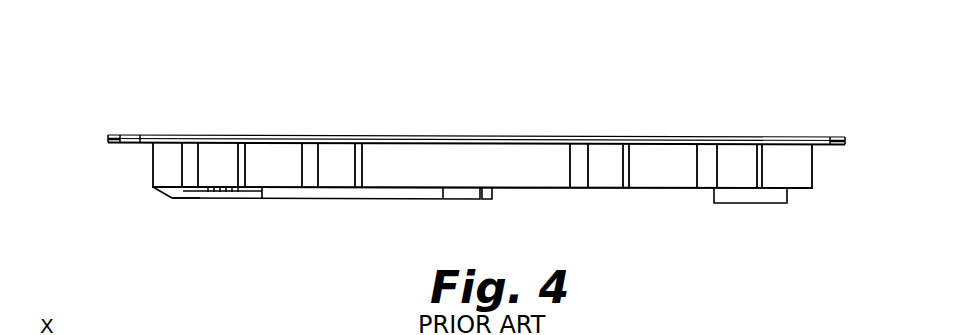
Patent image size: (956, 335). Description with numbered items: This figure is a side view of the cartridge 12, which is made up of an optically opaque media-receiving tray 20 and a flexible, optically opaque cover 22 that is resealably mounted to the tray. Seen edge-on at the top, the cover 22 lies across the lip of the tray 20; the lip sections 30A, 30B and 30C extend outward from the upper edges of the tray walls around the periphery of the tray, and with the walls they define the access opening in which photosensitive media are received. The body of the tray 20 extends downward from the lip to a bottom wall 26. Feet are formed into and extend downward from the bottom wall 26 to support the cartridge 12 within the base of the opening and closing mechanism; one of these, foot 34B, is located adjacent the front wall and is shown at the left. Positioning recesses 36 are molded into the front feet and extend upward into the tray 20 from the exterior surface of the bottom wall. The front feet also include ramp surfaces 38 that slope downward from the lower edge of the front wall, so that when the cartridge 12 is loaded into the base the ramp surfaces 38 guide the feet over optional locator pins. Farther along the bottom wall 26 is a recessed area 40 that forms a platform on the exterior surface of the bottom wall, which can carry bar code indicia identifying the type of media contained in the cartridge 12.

The cartridge 12 is at (586, 58).
The media-receiving tray 20 is at (822, 183).
The flexible cover 22 is at (184, 136).
The bottom wall 26 is at (528, 189).
The lip section 30A is at (108, 138).
The lip section 30B is at (831, 137).
The lip section 30C is at (518, 137).
The foot 34B is at (185, 197).
The positioning recesses 36 is at (229, 198).
The ramp surfaces 38 is at (170, 197).
The recessed area 40 is at (317, 197).